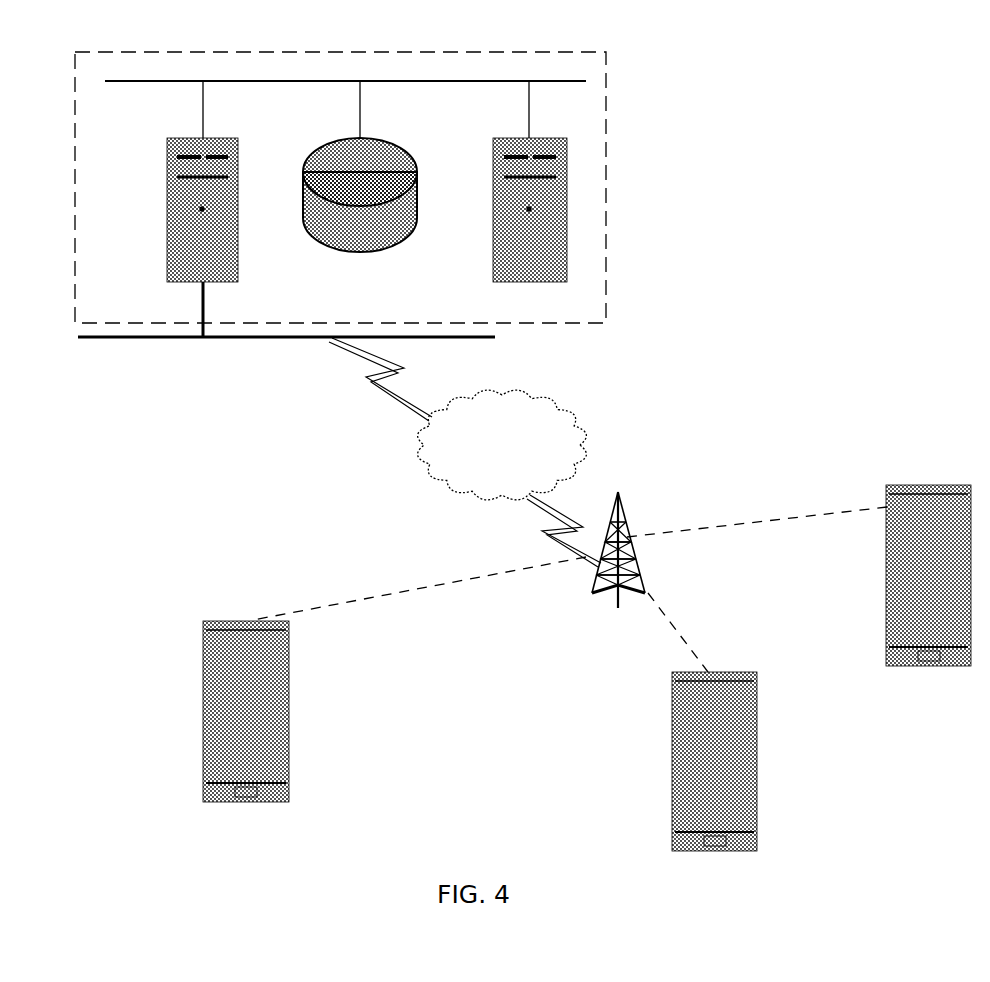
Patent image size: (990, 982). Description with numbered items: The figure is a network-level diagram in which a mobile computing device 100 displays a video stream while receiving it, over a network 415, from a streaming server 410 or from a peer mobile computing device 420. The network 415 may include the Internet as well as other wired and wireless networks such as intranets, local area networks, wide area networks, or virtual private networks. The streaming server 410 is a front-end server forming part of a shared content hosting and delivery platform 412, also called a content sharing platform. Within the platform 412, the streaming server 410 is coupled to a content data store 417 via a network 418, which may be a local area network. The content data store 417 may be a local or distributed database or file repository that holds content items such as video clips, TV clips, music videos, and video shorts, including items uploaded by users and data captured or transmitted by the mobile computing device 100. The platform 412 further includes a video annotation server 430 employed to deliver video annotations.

The shared content hosting and delivery platform 412 is at (344, 171).
The network 418 is at (339, 109).
The streaming server 410 is at (208, 225).
The video annotation server 430 is at (534, 197).
The content data store 417 is at (362, 207).
The network 415 is at (502, 445).
The mobile computing device 100 is at (246, 726).
The peer mobile computing device 420 is at (821, 683).